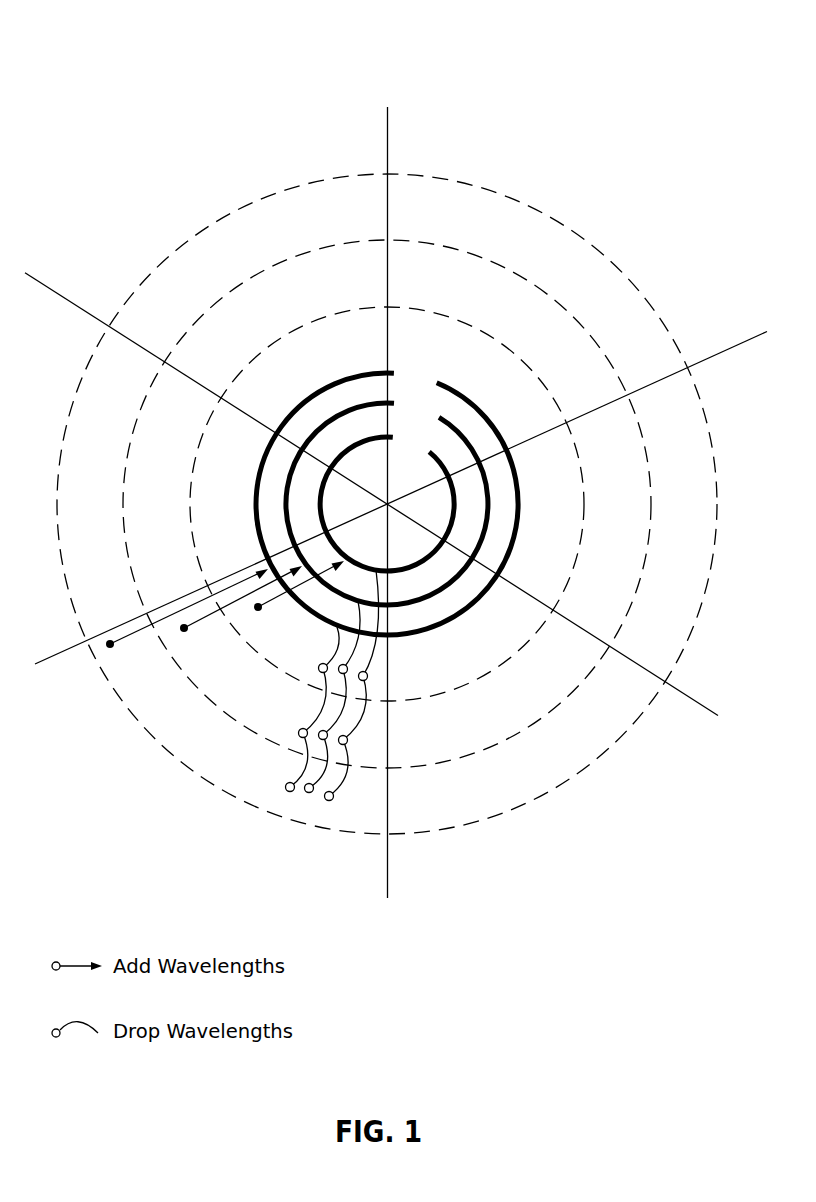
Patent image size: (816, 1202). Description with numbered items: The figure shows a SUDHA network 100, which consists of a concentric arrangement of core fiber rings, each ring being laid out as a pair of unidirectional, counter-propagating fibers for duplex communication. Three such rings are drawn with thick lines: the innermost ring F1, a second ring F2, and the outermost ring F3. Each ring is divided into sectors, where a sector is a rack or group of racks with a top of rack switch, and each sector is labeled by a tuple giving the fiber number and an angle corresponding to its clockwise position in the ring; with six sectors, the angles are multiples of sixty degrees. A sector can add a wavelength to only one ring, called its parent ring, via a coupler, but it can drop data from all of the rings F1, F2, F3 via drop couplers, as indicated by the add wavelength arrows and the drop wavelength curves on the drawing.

The SUDHA network 100 is at (396, 453).
The innermost core fiber ring F1 is at (387, 501).
The second core fiber ring F2 is at (387, 502).
The outermost core fiber ring F3 is at (387, 500).